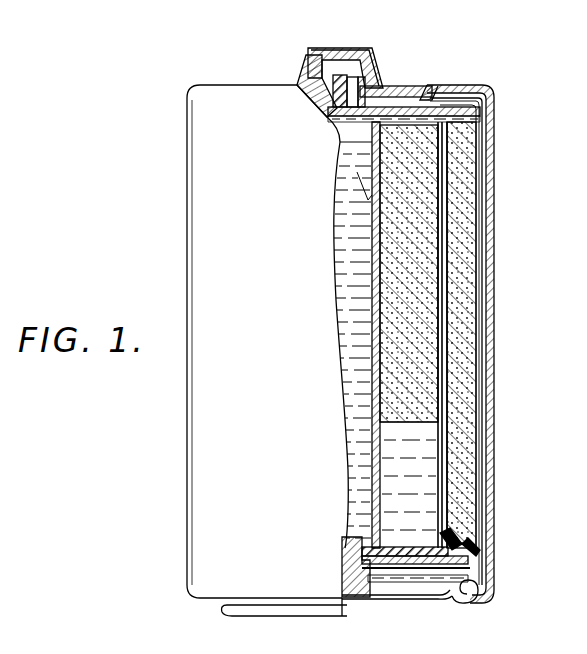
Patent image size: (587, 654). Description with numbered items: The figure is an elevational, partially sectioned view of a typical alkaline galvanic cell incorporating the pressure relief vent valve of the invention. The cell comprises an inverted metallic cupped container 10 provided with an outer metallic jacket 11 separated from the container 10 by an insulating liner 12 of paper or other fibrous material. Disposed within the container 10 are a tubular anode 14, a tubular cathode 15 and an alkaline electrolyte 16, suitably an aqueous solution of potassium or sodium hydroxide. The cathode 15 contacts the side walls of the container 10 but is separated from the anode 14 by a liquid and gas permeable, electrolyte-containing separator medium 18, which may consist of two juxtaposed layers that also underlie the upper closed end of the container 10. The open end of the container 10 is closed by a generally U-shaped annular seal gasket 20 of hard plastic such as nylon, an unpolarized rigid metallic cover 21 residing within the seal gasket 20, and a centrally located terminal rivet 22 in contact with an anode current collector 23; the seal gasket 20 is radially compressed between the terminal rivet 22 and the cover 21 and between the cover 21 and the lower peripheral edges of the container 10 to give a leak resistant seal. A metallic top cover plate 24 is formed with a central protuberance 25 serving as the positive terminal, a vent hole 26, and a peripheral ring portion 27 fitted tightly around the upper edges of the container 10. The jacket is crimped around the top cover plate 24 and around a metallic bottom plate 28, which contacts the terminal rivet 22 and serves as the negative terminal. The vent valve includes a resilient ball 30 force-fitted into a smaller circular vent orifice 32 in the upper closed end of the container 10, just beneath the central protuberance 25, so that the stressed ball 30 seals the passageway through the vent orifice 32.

The cupped container 10 is at (488, 186).
The outer metallic jacket 11 is at (495, 226).
The insulating liner 12 is at (487, 262).
The tubular anode 14 is at (428, 370).
The tubular cathode 15 is at (475, 304).
The alkaline electrolyte 16 is at (352, 326).
The separator medium 18 is at (445, 410).
The seal gasket 20 is at (428, 547).
The metallic cover 21 is at (420, 565).
The terminal rivet 22 is at (351, 570).
The anode current collector 23 is at (372, 452).
The top cover plate 24 is at (381, 88).
The central protuberance 25 is at (345, 50).
The vent hole 26 is at (431, 86).
The peripheral ring portion 27 is at (484, 124).
The bottom plate 28 is at (456, 603).
The resilient ball 30 is at (347, 77).
The vent orifice 32 is at (335, 92).